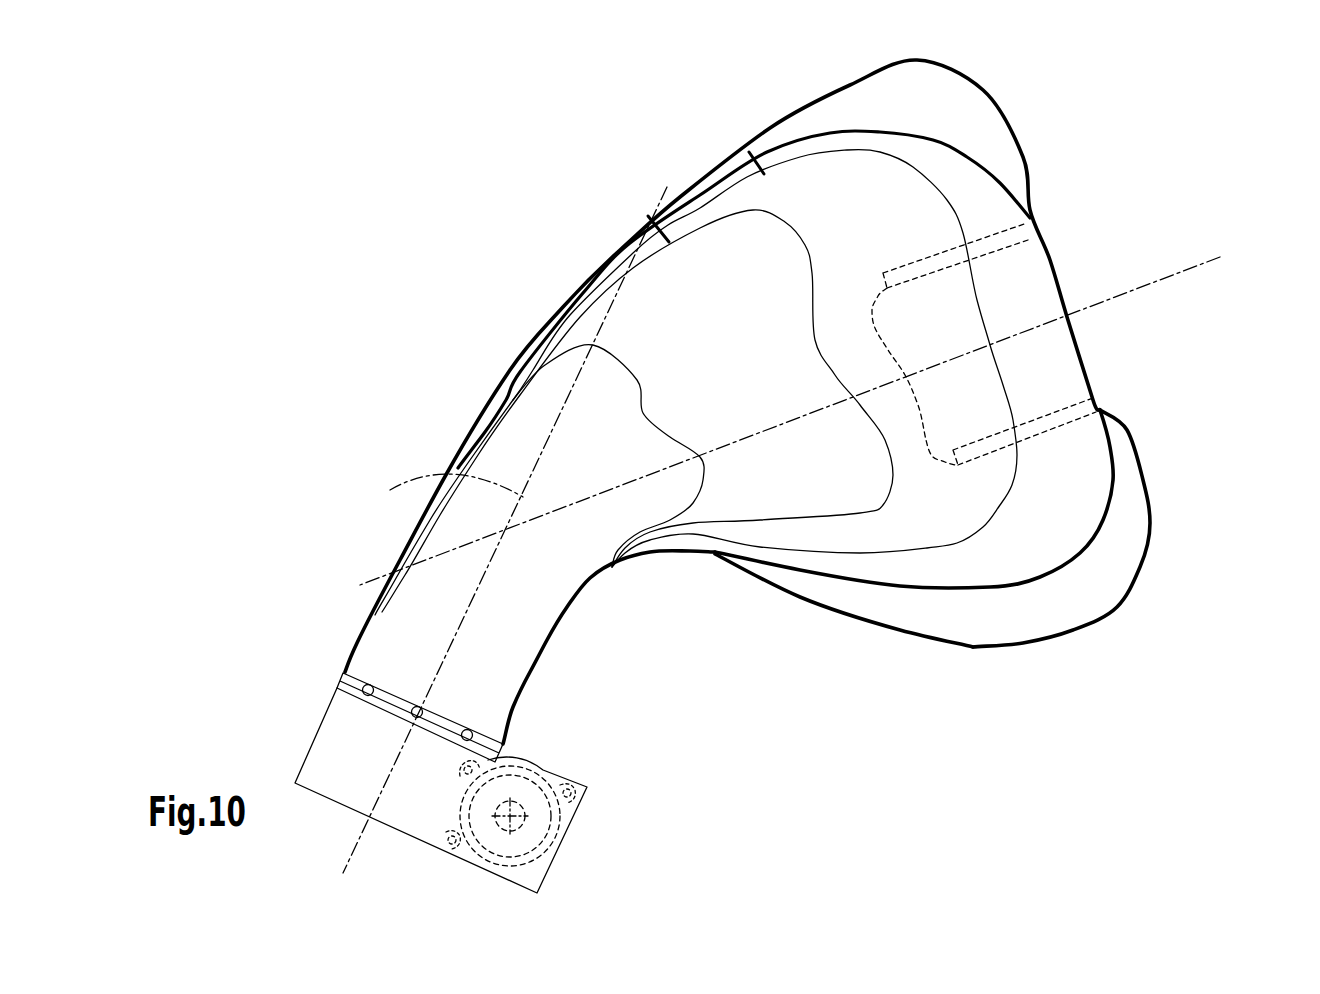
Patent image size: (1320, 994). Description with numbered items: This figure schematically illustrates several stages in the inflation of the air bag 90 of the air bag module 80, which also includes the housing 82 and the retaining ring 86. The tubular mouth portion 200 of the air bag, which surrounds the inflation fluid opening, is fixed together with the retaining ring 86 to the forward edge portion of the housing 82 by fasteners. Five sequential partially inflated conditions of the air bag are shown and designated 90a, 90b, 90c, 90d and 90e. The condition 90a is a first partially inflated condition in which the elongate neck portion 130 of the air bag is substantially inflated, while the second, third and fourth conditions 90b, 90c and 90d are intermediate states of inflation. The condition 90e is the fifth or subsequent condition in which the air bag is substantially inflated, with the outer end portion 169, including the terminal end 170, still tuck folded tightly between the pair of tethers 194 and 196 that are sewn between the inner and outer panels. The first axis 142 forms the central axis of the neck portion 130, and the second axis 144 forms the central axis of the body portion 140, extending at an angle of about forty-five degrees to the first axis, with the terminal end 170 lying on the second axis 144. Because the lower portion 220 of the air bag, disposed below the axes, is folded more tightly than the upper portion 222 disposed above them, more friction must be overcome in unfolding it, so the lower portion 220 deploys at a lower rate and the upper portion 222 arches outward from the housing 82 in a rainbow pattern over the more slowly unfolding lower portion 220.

The air bag module 80 is at (918, 740).
The housing 82 is at (575, 853).
The retaining ring 86 is at (485, 740).
The air bag 90 is at (822, 703).
The first partially inflated condition 90a is at (712, 458).
The second partially inflated condition 90b is at (650, 217).
The third partially inflated condition 90c is at (749, 152).
The fourth partially inflated condition 90d is at (1112, 530).
The fifth partially inflated condition 90e is at (1120, 626).
The neck portion 130 is at (350, 561).
The body portion 140 is at (1050, 125).
The first axis 142 is at (434, 492).
The second axis 144 is at (1187, 268).
The outer end portion 169 is at (860, 306).
The terminal end 170 is at (888, 362).
The tether 194 is at (990, 258).
The tether 196 is at (1038, 420).
The mouth portion 200 is at (346, 642).
The lower portion 220 is at (643, 592).
The upper portion 222 is at (505, 255).